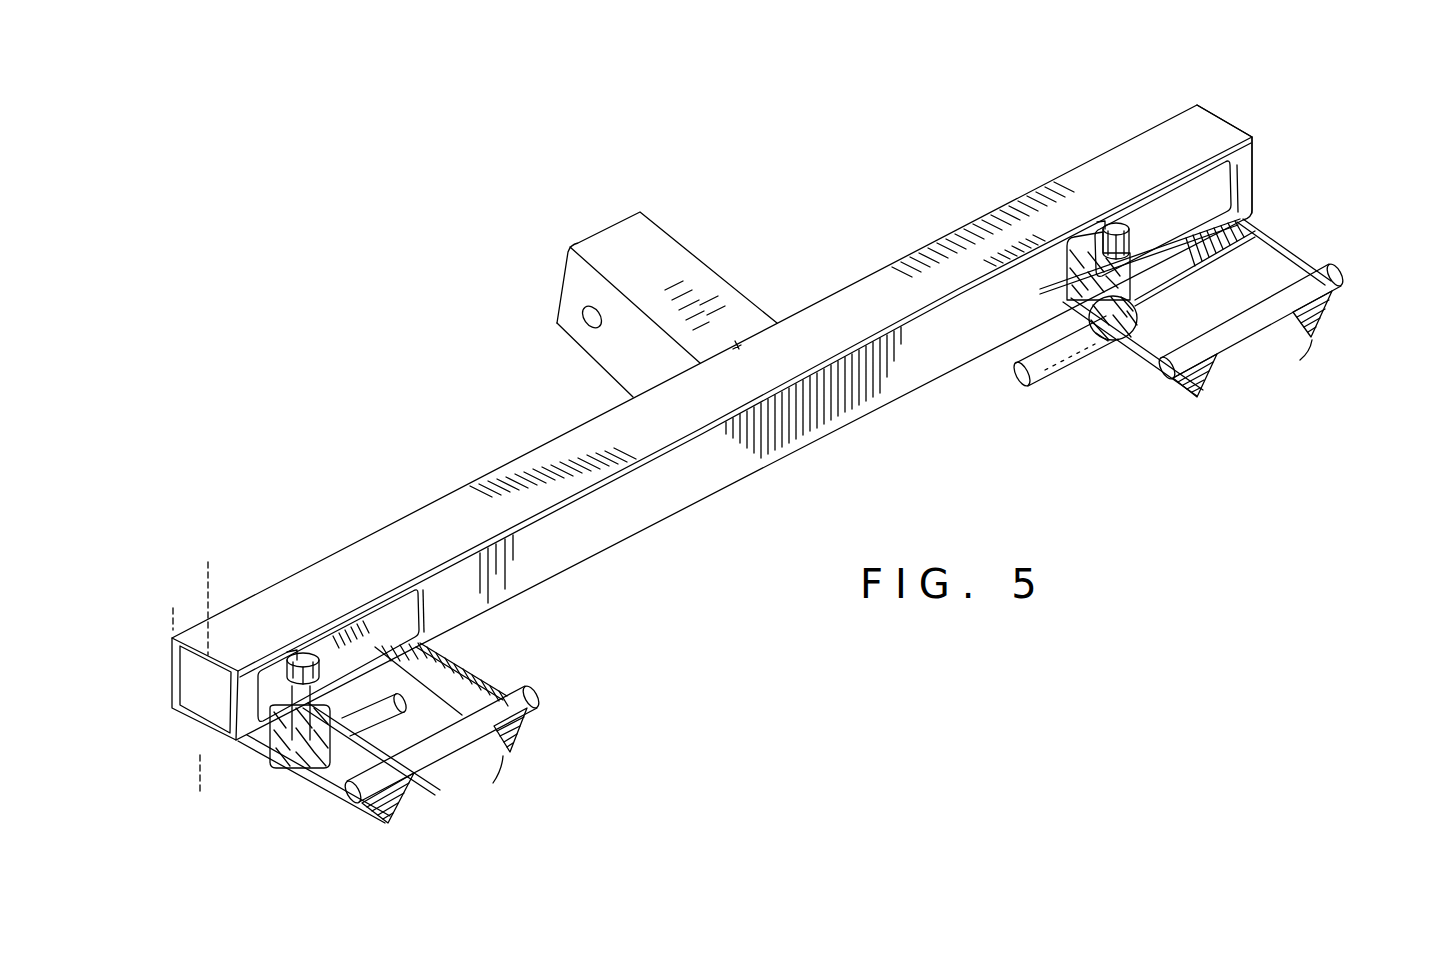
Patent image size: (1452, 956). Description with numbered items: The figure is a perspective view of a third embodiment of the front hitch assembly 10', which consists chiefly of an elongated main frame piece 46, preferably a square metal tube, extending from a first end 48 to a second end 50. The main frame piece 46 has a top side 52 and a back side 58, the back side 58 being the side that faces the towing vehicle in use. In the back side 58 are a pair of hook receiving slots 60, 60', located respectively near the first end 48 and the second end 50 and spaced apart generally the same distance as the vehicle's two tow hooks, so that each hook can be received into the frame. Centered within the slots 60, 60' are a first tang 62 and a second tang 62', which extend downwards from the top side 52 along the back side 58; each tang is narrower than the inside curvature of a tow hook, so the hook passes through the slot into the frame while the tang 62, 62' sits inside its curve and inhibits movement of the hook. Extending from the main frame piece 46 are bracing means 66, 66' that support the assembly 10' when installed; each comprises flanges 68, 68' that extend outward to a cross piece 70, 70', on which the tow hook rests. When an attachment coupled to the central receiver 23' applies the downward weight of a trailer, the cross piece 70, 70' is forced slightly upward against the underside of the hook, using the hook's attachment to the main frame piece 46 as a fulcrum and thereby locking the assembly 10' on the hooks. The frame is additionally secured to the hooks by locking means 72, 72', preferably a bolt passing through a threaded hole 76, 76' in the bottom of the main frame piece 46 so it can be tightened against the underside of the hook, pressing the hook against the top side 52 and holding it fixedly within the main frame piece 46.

The front hitch assembly 10' is at (400, 349).
The central receiver 23' is at (667, 281).
The main frame piece 46 is at (848, 312).
The first end 48 is at (165, 680).
The second end 50 is at (1237, 130).
The top side 52 is at (490, 539).
The back side 58 is at (625, 545).
The hook receiving slot 60 is at (248, 727).
The hook receiving slot 60' is at (1279, 188).
The first tang 62 is at (341, 649).
The second tang 62' is at (1163, 211).
The bracing means 66 is at (418, 727).
The bracing means 66' is at (1185, 325).
The flange 68 is at (444, 765).
The flange 68' is at (1252, 345).
The cross piece 70 is at (472, 745).
The cross piece 70' is at (1291, 318).
The locking means 72 is at (320, 766).
The locking means 72' is at (1035, 361).
The threaded hole 76 is at (277, 649).
The threaded hole 76' is at (1081, 223).